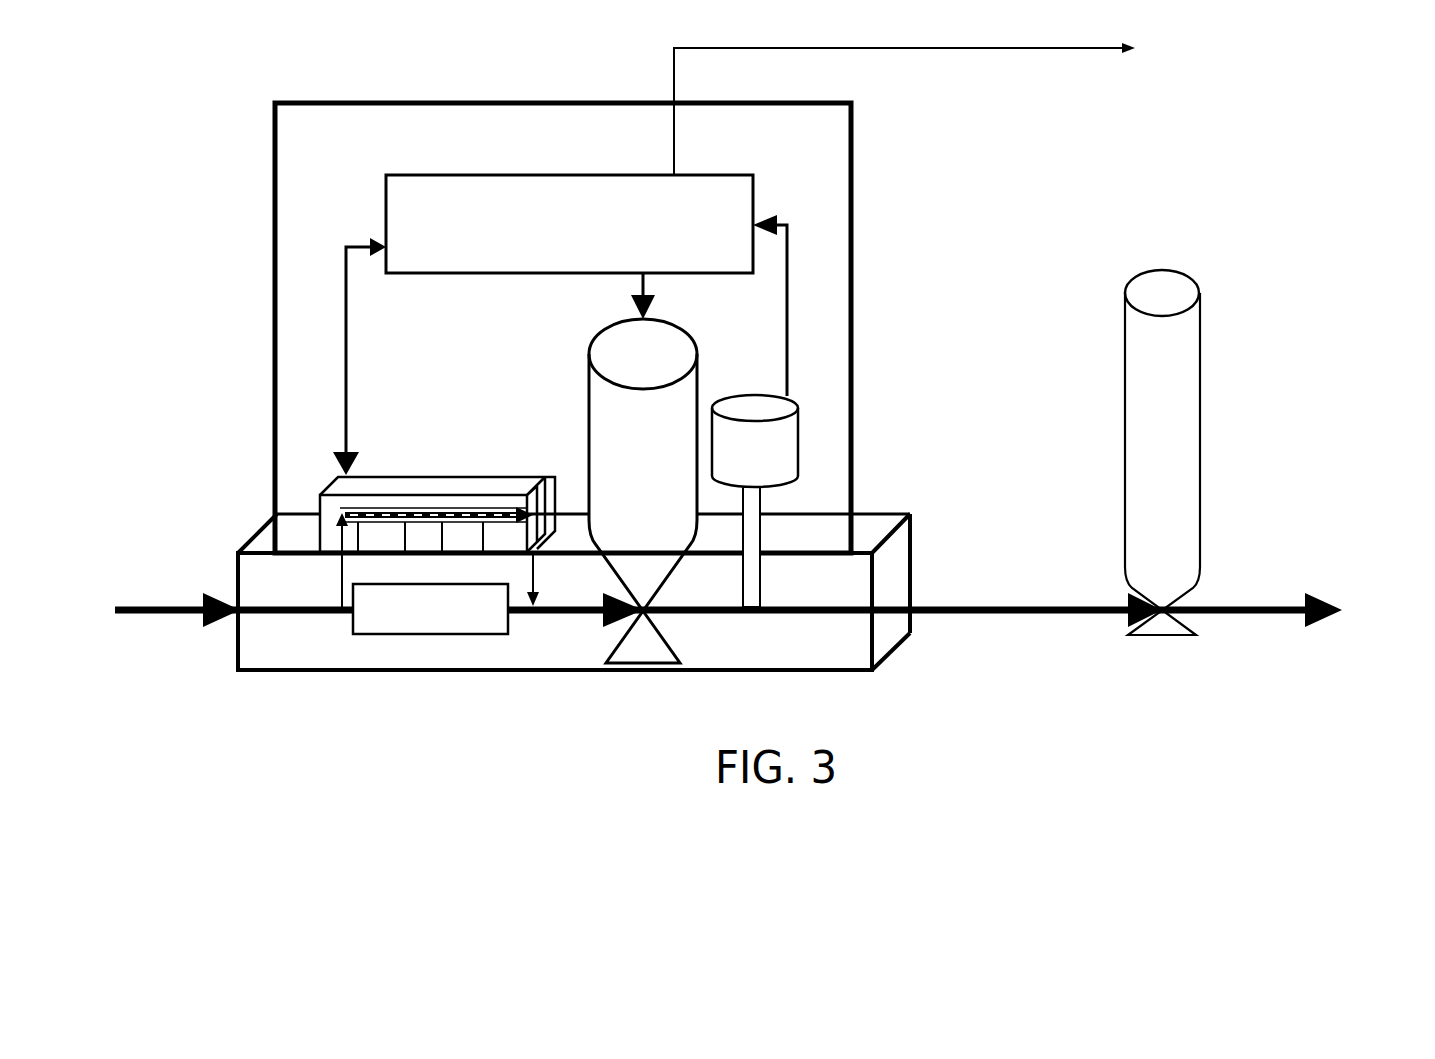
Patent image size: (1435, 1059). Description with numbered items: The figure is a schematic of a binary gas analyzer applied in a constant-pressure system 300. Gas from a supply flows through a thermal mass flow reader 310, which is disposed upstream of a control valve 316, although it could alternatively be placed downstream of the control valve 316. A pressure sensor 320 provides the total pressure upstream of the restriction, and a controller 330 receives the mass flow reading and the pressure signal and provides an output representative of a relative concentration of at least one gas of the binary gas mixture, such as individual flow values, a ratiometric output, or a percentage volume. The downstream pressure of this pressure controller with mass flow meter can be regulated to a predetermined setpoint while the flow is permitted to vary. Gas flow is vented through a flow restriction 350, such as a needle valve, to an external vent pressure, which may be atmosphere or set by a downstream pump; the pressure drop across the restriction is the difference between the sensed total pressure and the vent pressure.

The system 300 is at (190, 277).
The thermal mass flow reader 310 is at (387, 473).
The control valve 316 is at (664, 478).
The pressure sensor 320 is at (805, 402).
The controller 330 is at (594, 237).
The flow restriction 350 is at (1178, 602).